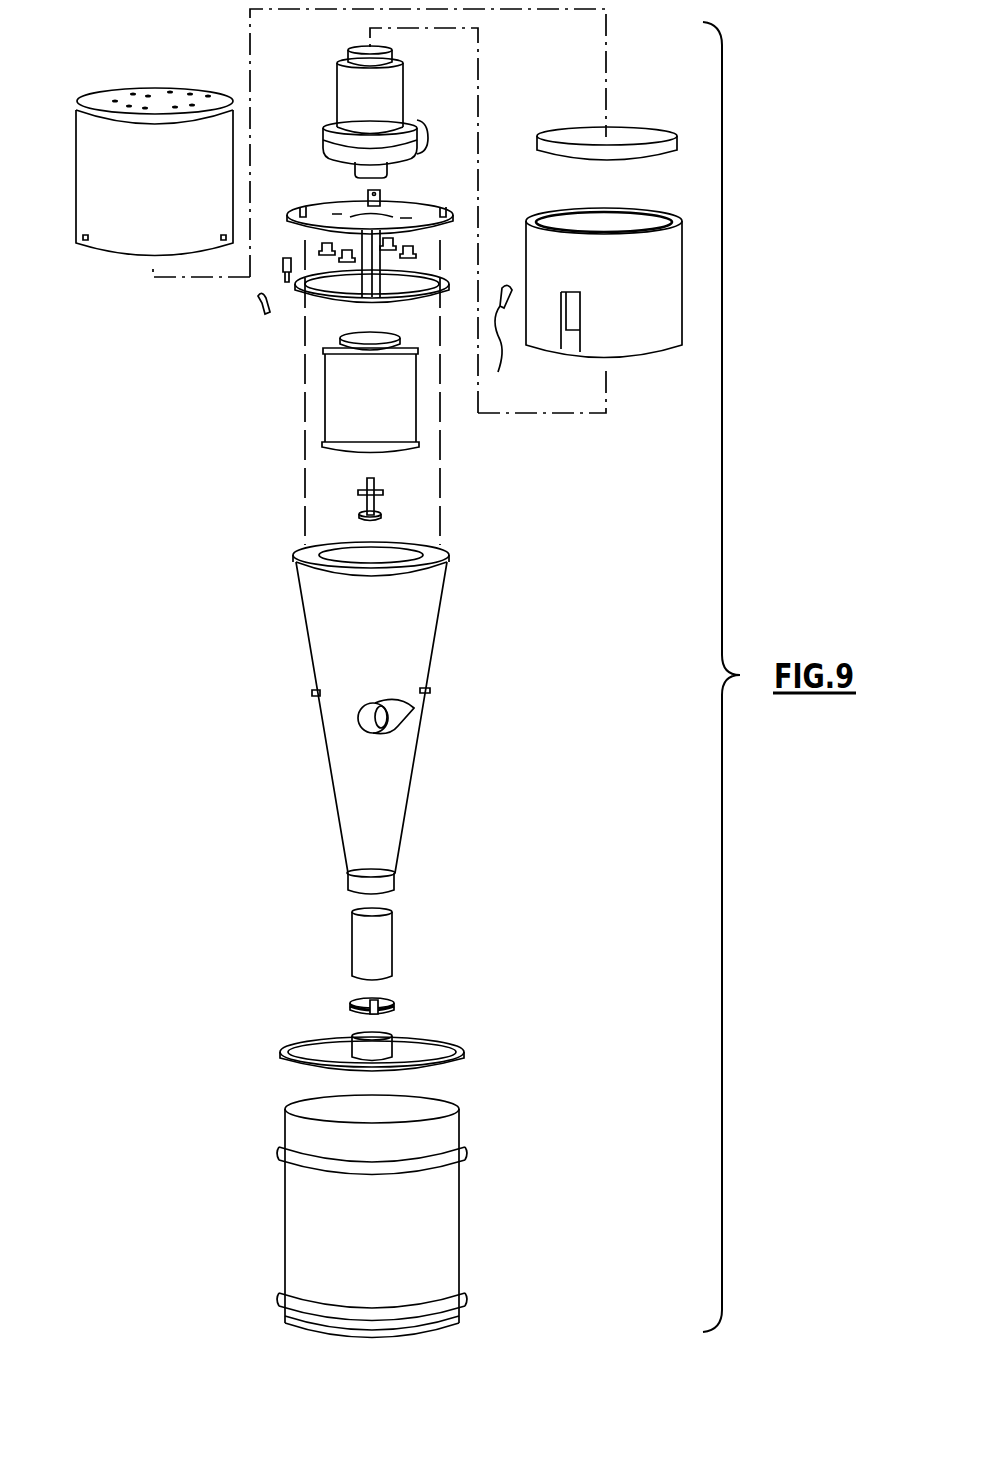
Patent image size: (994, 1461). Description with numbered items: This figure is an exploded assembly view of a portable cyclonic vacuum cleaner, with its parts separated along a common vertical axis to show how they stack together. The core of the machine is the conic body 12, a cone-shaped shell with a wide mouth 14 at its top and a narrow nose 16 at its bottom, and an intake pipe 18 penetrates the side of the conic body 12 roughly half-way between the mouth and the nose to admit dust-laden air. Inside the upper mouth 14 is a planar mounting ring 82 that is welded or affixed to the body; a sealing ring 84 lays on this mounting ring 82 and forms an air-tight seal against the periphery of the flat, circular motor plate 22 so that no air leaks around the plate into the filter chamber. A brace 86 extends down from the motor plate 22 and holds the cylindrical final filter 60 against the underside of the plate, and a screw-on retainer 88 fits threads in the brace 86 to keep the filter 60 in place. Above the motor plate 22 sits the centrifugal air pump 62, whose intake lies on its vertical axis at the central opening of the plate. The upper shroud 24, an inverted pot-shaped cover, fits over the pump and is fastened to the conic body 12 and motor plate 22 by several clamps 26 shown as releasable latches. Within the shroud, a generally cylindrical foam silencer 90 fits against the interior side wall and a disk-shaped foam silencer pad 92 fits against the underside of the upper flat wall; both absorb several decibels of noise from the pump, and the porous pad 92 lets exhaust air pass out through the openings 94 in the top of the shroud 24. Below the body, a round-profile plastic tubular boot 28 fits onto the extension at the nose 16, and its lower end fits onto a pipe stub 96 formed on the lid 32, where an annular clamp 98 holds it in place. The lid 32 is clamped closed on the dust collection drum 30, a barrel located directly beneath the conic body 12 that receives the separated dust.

The conic body 12 is at (305, 738).
The mouth 14 is at (290, 568).
The nose 16 is at (400, 882).
The intake pipe 18 is at (398, 712).
The motor plate 22 is at (410, 206).
The upper shroud 24 is at (92, 200).
The clamps 26 is at (252, 318).
The tubular boot 28 is at (393, 945).
The dust collection drum 30 is at (460, 1232).
The lid 32 is at (455, 1047).
The final filter 60 is at (337, 387).
The centrifugal air pump 62 is at (333, 130).
The mounting ring 82 is at (455, 553).
The sealing ring 84 is at (300, 298).
The brace 86 is at (380, 265).
The screw-on retainer 88 is at (386, 508).
The foam silencer 90 is at (647, 338).
The foam silencer pad 92 is at (650, 133).
The openings 94 is at (182, 92).
The pipe stub 96 is at (352, 1052).
The annular clamp 98 is at (396, 1007).